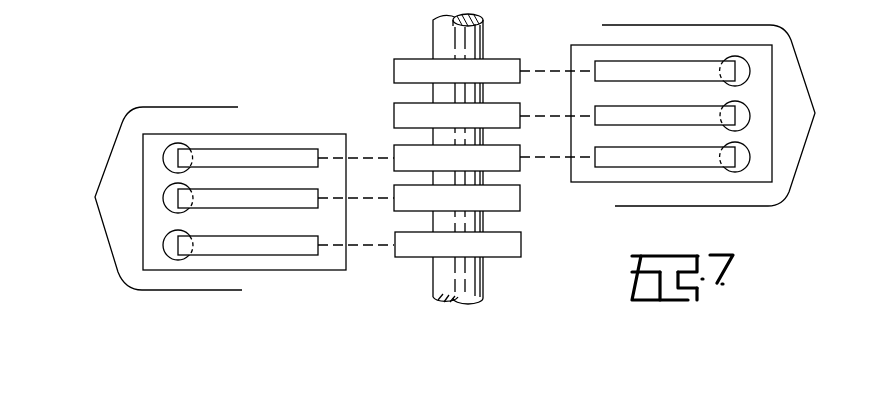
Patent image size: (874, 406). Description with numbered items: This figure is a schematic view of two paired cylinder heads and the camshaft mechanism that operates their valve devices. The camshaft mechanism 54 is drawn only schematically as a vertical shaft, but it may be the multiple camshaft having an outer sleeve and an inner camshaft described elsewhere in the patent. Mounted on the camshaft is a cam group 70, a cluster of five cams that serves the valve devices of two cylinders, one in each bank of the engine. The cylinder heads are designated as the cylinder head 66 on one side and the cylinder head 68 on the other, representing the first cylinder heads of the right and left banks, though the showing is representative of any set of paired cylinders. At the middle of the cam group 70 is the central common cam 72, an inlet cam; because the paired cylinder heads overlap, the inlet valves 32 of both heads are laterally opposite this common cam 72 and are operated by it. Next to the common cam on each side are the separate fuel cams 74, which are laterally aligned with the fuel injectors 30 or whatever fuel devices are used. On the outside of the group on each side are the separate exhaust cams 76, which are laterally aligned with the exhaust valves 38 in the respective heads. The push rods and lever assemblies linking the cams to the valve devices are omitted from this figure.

The fuel injectors 30 is at (170, 195).
The inlet valves 32 is at (170, 155).
The exhaust valves 38 is at (175, 250).
The camshaft mechanism 54 is at (470, 292).
The cylinder head 66 is at (795, 147).
The cylinder head 68 is at (122, 232).
The cam group 70 is at (535, 235).
The central common cam 72 is at (517, 162).
The fuel cams 74 is at (513, 112).
The exhaust cams 76 is at (413, 68).